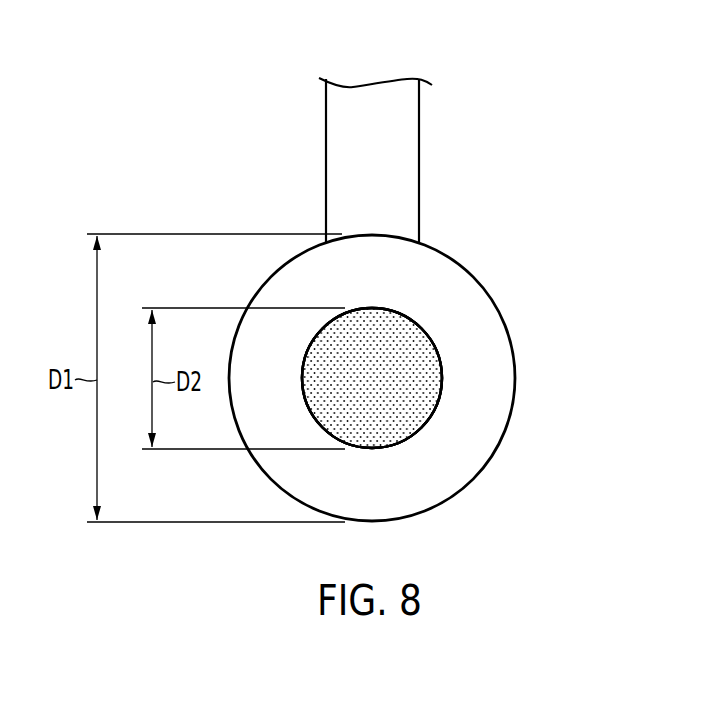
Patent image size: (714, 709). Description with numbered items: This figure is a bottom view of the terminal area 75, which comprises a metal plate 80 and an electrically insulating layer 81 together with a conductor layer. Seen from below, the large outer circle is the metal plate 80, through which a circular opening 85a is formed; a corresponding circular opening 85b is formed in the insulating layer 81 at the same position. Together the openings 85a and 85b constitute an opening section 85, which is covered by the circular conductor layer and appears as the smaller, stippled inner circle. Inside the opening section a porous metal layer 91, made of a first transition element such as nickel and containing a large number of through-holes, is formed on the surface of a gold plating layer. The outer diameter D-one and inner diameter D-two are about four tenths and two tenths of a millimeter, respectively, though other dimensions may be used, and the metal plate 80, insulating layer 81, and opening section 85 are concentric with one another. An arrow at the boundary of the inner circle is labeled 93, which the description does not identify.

The terminal area 75 is at (405, 322).
The electrically insulating layer 81 is at (408, 140).
The metal plate 80 is at (497, 335).
The opening section 85 is at (441, 437).
The circular opening 85a is at (410, 438).
The circular opening 85b is at (495, 523).
The porous metal layer 91 is at (415, 403).
The boundary surface 93 is at (452, 380).